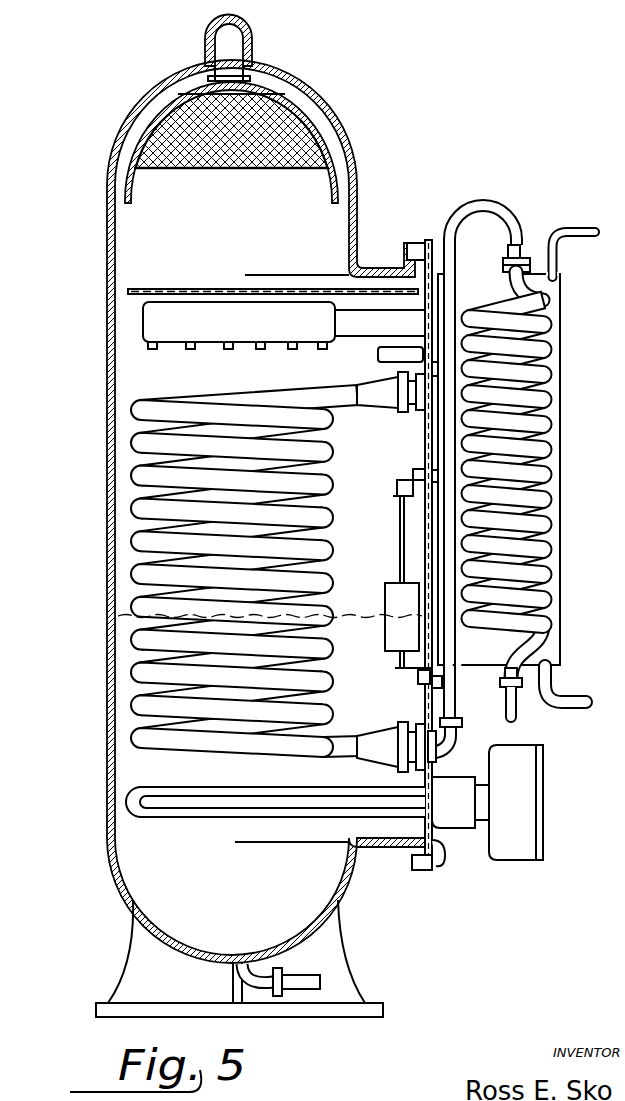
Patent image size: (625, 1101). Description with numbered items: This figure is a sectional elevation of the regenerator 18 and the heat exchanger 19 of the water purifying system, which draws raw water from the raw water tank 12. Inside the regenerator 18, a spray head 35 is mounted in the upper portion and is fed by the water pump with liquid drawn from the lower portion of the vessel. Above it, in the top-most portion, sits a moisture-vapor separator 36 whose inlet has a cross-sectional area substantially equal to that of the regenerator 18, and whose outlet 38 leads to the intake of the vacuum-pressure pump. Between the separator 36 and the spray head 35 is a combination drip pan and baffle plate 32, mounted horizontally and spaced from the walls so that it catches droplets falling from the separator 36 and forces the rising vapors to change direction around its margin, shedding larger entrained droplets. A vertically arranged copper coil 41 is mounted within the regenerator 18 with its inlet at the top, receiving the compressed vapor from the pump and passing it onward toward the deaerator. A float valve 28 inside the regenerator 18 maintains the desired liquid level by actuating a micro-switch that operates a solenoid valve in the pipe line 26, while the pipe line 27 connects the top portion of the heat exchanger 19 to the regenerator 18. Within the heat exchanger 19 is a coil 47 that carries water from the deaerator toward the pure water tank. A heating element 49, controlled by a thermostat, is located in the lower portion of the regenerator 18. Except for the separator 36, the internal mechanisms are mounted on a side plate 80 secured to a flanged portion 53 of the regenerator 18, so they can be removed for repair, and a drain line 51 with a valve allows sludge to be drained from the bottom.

The raw water tank 12 is at (457, 708).
The regenerator 18 is at (108, 680).
The heat exchanger 19 is at (562, 526).
The pipe line 26 is at (576, 709).
The pipe line 27 is at (567, 232).
The float valve 28 is at (397, 612).
The drip pan and baffle plate 32 is at (178, 289).
The spray head 35 is at (142, 305).
The moisture-vapor separator 36 is at (322, 118).
The outlet 38 is at (255, 48).
The copper coil 41 is at (152, 516).
The coil 47 is at (548, 392).
The heating element 49 is at (143, 818).
The drain line 51 is at (315, 973).
The flanged portion 53 is at (411, 870).
The side plate 80 is at (438, 852).